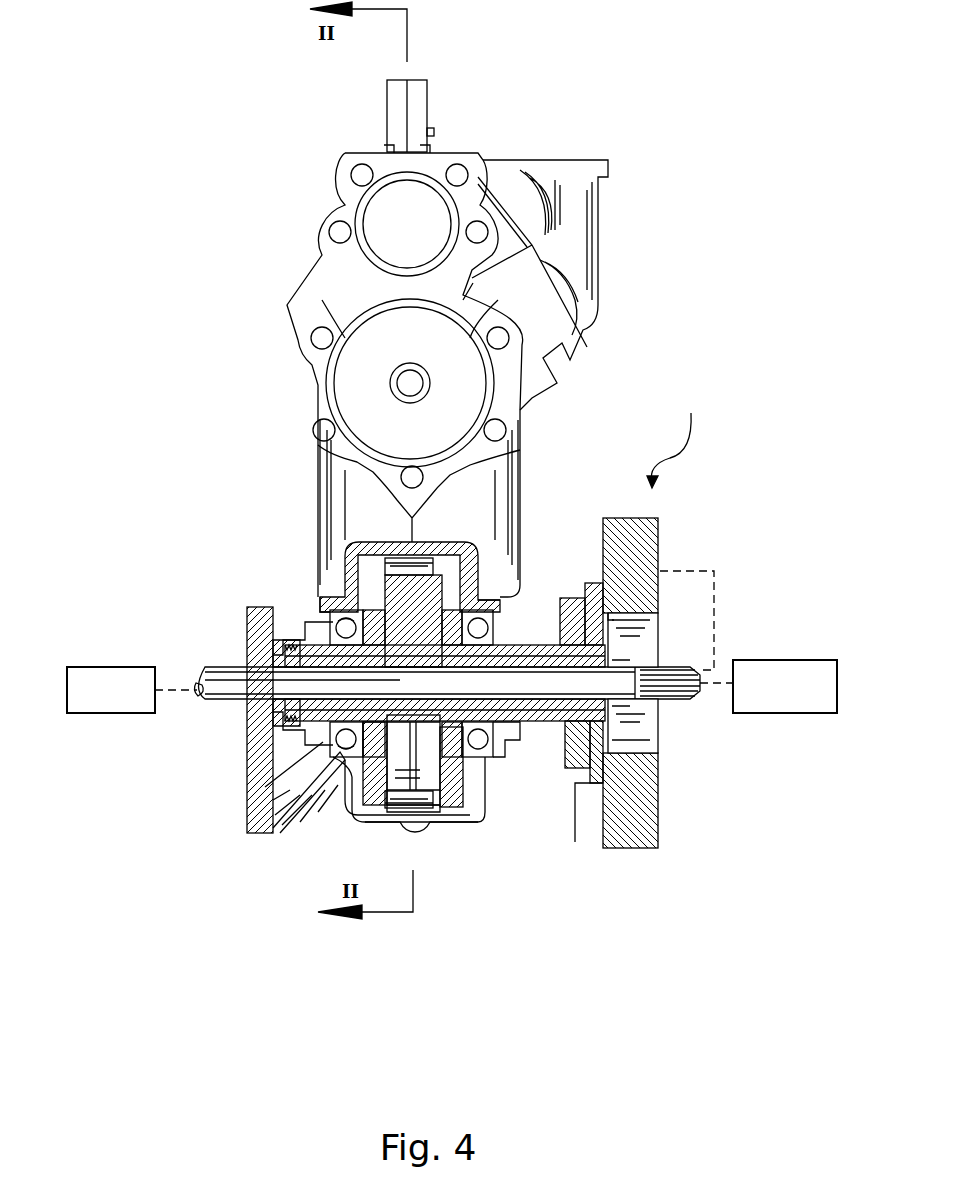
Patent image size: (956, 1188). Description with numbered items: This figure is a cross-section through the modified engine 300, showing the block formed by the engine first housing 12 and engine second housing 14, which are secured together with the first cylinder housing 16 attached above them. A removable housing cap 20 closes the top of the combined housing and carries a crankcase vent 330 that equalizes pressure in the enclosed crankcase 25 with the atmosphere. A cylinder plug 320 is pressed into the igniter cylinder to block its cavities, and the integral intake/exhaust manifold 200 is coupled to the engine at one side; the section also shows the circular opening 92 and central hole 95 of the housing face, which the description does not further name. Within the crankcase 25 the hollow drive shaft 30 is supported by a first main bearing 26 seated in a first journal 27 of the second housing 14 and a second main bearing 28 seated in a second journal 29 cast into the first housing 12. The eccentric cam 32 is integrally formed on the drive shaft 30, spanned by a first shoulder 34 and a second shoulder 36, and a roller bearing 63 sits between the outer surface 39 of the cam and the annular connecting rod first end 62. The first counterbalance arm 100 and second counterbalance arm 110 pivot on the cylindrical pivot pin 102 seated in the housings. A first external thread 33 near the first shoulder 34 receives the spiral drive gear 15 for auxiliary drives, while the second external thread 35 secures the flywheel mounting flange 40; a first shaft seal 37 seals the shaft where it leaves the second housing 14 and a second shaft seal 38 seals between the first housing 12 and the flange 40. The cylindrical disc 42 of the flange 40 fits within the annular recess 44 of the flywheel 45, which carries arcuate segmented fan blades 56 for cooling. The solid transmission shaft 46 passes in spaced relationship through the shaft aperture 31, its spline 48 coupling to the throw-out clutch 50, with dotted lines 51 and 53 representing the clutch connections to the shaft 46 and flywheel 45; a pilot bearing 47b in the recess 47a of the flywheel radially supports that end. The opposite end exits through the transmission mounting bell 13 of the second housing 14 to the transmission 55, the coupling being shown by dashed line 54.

The engine first housing 12 is at (524, 479).
The transmission mounting bell 13 is at (287, 813).
The engine second housing 14 is at (316, 485).
The spiral drive gear 15 is at (305, 742).
The first cylinder housing 16 is at (312, 380).
The housing cap 20 is at (392, 108).
The crankcase 25 is at (447, 818).
The first main bearing 26 is at (333, 617).
The first journal 27 is at (325, 605).
The second main bearing 28 is at (482, 600).
The second journal 29 is at (488, 610).
The drive shaft 30 is at (555, 742).
The shaft aperture 31 is at (440, 625).
The eccentric cam 32 is at (446, 602).
The first external thread 33 is at (320, 716).
The first shoulder 34 is at (372, 720).
The second external thread 35 is at (592, 765).
The second shoulder 36 is at (468, 722).
The first shaft seal 37 is at (262, 652).
The second shaft seal 38 is at (525, 738).
The outer surface 39 is at (388, 567).
The flywheel mounting flange 40 is at (530, 648).
The cylindrical disc 42 is at (562, 620).
The annular recess 44 is at (590, 590).
The flywheel 45 is at (654, 520).
The transmission shaft 46 is at (245, 692).
The recess 47a is at (659, 637).
The pilot bearing 47b is at (659, 628).
The spline 48 is at (672, 702).
The throw-out clutch 50 is at (758, 660).
The dotted line 51 is at (713, 697).
The dotted line 53 is at (717, 608).
The dashed line 54 is at (172, 694).
The transmission 55 is at (103, 666).
The arcuate segmented fan blades 56 is at (606, 530).
The connecting rod first end 62 is at (425, 728).
The roller bearing 63 is at (352, 548).
The bore 92 is at (402, 302).
The center hole 95 is at (392, 386).
The first counterbalance arm 100 is at (462, 793).
The pivot pin 102 is at (395, 822).
The second counterbalance arm 110 is at (360, 803).
The intake/exhaust manifold 200 is at (592, 222).
The modified engine 300 is at (684, 437).
The cylinder plug 320 is at (370, 210).
The crankcase vent 330 is at (434, 131).